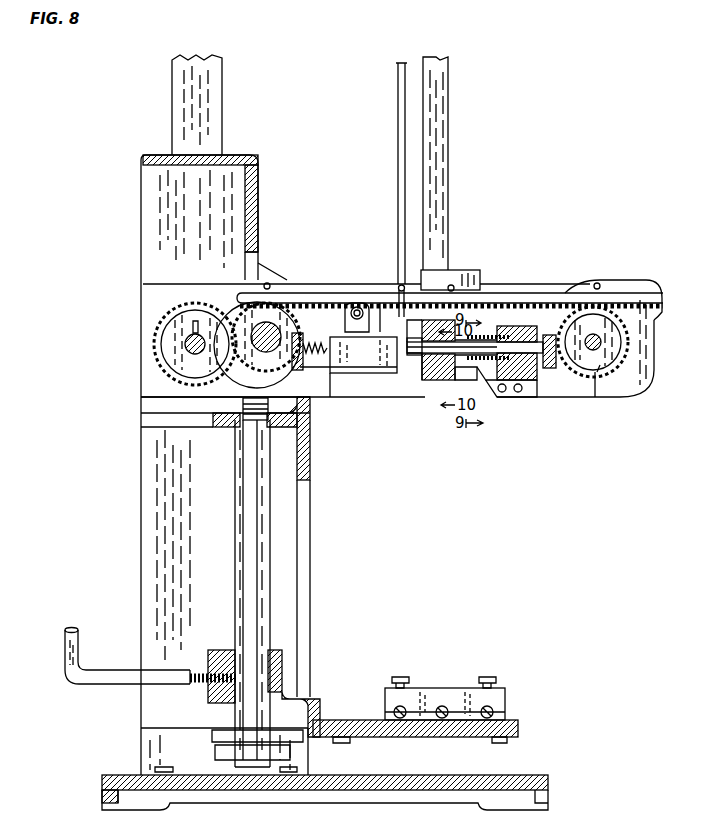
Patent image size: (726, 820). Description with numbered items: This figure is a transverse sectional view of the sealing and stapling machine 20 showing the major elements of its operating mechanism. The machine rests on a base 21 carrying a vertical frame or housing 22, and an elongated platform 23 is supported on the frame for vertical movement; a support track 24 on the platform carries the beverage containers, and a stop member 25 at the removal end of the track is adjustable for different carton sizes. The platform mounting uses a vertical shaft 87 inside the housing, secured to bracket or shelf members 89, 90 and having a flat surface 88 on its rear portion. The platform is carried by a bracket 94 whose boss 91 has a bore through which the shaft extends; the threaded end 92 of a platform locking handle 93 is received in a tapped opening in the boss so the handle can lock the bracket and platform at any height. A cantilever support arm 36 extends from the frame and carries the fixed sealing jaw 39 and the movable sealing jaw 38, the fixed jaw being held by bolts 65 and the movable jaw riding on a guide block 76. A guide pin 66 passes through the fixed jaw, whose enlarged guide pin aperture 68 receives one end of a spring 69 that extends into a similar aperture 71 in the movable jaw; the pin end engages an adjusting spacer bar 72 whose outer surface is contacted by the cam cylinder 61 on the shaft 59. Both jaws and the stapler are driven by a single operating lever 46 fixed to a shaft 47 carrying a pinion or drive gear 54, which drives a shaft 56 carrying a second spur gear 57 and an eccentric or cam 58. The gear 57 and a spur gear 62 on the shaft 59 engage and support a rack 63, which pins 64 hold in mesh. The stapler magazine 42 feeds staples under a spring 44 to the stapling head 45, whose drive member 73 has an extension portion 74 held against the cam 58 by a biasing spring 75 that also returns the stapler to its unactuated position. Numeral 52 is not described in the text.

The sealing and stapling machine 20 is at (327, 153).
The base 21 is at (462, 797).
The vertical frame or housing 22 is at (147, 571).
The platform 23 is at (520, 722).
The support track 24 is at (485, 706).
The stop member 25 is at (505, 698).
The cantilever support arm 36 is at (618, 383).
The movable sealing jaw 38 is at (530, 378).
The fixed sealing jaw 39 is at (430, 381).
The magazine 42 is at (441, 143).
The spring 44 is at (398, 157).
The stapling head 45 is at (371, 383).
The operating lever 46 is at (177, 96).
The shaft 47 is at (190, 348).
The bracket 52 is at (466, 392).
The pinion or drive gear 54 is at (163, 344).
The shaft 56 is at (287, 363).
The second spur gear 57 is at (285, 300).
The eccentric or cam 58 is at (183, 386).
The shaft 59 is at (596, 376).
The cam cylinder 61 is at (621, 354).
The spur gear 62 is at (601, 340).
The rack 63 is at (635, 292).
The pins 64 is at (268, 283).
The bolts 65 is at (452, 285).
The guide pin 66 is at (417, 336).
The guide pin aperture 68 is at (482, 338).
The spring 69 is at (500, 340).
The aperture 71 is at (552, 370).
The adjusting spacer bar 72 is at (562, 333).
The drive member 73 is at (317, 373).
The extension portion 74 is at (287, 360).
The biasing spring 75 is at (328, 348).
The guide block 76 is at (527, 399).
The vertical shaft 87 is at (243, 547).
The flat surface 88 is at (238, 498).
The bracket or shelf member 89 is at (228, 740).
The bracket or shelf member 90 is at (222, 427).
The boss 91 is at (283, 663).
The threaded end 92 is at (200, 690).
The platform locking handle 93 is at (104, 684).
The bracket 94 is at (507, 742).